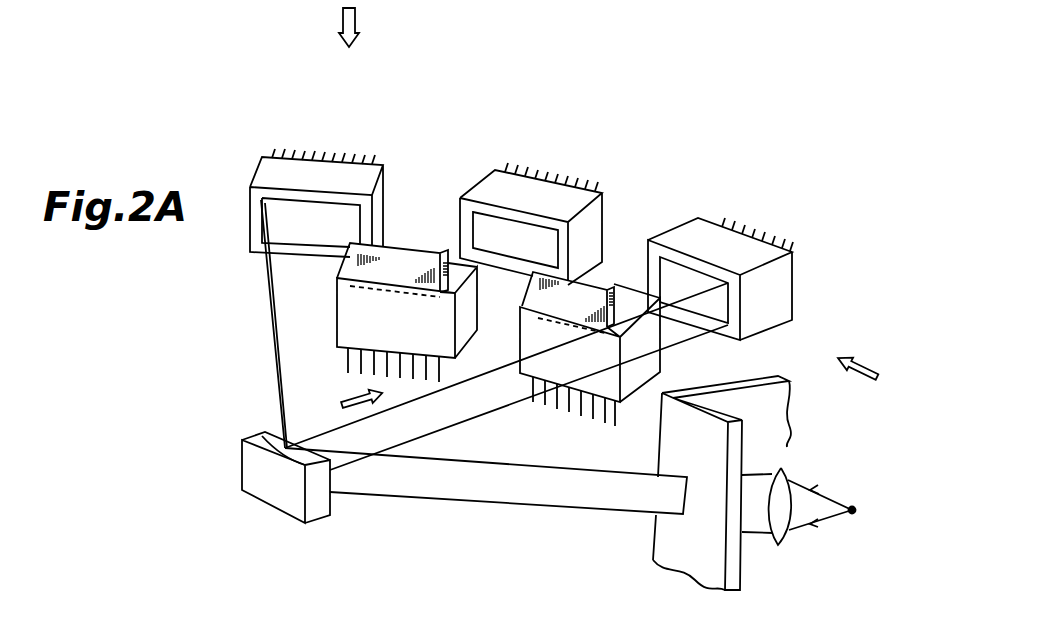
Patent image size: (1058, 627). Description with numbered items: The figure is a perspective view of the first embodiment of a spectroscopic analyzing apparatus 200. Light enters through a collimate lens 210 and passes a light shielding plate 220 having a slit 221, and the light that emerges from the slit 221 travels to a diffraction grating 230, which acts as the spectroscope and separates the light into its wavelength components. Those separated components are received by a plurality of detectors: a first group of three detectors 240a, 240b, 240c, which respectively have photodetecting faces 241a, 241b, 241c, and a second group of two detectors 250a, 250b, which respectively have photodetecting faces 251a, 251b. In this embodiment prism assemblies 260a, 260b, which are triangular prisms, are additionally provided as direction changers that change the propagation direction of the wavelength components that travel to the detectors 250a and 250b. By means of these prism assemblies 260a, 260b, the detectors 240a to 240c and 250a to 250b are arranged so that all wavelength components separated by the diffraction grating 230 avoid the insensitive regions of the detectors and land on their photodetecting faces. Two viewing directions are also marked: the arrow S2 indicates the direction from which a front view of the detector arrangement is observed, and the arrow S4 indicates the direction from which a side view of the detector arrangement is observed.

The spectroscopic analyzing apparatus 200 is at (840, 98).
The detector 240a is at (270, 165).
The photodetecting face 241a is at (337, 203).
The prism assembly 260a is at (393, 248).
The detector 250a is at (337, 319).
The photodetecting face 251a is at (372, 292).
The detector 240b is at (497, 180).
The photodetecting face 241b is at (522, 217).
The prism assembly 260b is at (580, 272).
The detector 250b is at (613, 407).
The photodetecting face 251b is at (605, 336).
The detector 240c is at (707, 230).
The photodetecting face 241c is at (718, 273).
The diffraction grating 230 is at (320, 510).
The slit 221 is at (690, 498).
The light shielding plate 220 is at (712, 573).
The collimate lens 210 is at (785, 478).
The arrow S2 is at (340, 410).
The arrow S4 is at (883, 382).